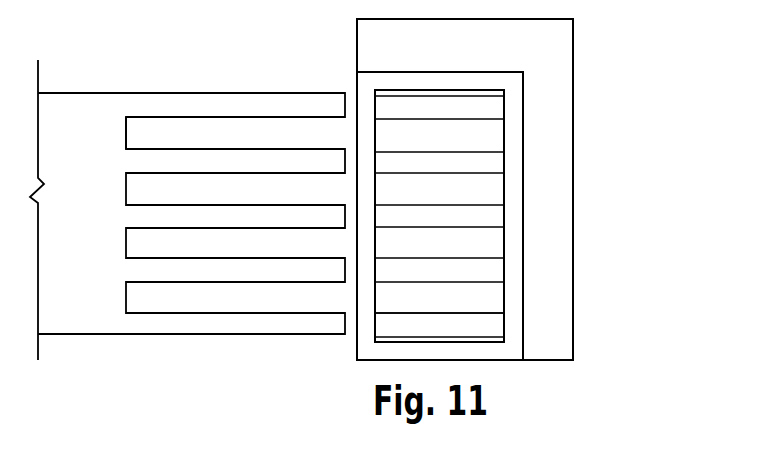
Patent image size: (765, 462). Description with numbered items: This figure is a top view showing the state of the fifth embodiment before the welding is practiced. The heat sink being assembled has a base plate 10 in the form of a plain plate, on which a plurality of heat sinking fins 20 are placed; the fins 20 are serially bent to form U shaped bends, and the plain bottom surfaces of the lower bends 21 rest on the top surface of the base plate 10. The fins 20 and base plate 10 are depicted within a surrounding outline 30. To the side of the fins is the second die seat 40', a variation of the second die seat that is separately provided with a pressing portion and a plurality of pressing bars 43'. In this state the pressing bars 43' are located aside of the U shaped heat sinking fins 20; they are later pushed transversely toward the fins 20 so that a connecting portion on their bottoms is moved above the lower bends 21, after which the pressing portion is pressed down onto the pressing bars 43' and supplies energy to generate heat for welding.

The second die seat 40' is at (187, 245).
The pressing bars 43' is at (235, 85).
The base plate 10 is at (367, 85).
The heat sinking fins 20 is at (493, 108).
The lower bends 21 is at (378, 325).
The housing 30 is at (562, 265).